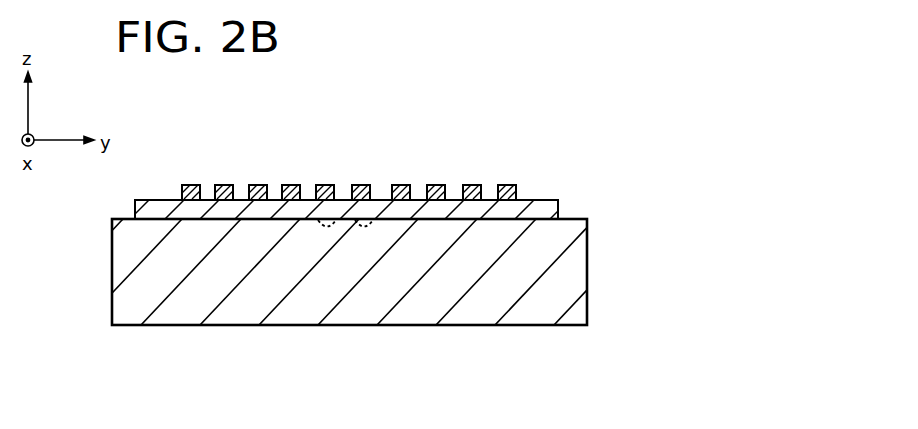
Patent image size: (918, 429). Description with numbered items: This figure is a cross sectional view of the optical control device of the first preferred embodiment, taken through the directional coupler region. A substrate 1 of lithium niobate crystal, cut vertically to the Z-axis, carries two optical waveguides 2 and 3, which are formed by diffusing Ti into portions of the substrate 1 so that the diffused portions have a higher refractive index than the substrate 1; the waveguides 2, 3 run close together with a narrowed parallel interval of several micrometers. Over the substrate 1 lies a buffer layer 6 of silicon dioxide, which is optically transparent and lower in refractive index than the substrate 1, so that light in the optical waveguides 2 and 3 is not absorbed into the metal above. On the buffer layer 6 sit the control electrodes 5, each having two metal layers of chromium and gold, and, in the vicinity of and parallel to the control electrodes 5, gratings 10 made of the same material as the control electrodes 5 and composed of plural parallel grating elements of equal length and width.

The substrate 1 is at (553, 270).
The optical waveguide 2 is at (368, 224).
The optical waveguide 3 is at (319, 224).
The control electrode 5 is at (365, 185).
The buffer layer 6 is at (544, 202).
The grating 10 is at (308, 178).